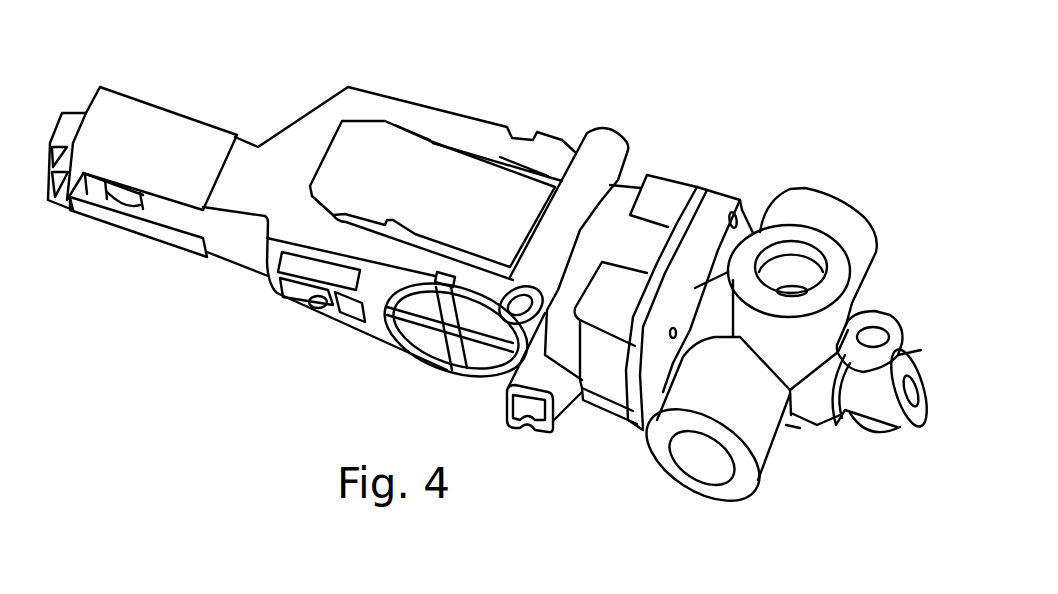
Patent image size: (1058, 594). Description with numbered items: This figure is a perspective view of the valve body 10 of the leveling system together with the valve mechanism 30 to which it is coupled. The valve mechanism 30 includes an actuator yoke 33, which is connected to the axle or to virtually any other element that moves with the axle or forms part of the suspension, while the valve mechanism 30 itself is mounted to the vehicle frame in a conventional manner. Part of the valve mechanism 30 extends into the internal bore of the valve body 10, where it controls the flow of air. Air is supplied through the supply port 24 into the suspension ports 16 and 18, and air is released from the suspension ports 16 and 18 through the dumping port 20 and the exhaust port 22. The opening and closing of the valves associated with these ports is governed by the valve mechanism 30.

The valve body 10 is at (718, 195).
The suspension port 16 is at (713, 493).
The suspension port 18 is at (815, 190).
The dumping port 20 is at (795, 418).
The exhaust port 22 is at (878, 440).
The supply port 24 is at (850, 285).
The valve mechanism 30 is at (667, 192).
The actuator yoke 33 is at (375, 92).